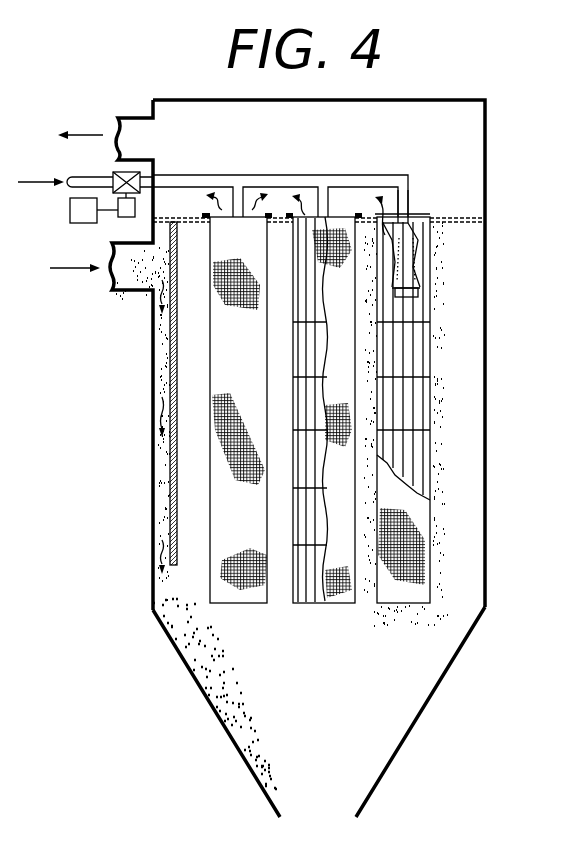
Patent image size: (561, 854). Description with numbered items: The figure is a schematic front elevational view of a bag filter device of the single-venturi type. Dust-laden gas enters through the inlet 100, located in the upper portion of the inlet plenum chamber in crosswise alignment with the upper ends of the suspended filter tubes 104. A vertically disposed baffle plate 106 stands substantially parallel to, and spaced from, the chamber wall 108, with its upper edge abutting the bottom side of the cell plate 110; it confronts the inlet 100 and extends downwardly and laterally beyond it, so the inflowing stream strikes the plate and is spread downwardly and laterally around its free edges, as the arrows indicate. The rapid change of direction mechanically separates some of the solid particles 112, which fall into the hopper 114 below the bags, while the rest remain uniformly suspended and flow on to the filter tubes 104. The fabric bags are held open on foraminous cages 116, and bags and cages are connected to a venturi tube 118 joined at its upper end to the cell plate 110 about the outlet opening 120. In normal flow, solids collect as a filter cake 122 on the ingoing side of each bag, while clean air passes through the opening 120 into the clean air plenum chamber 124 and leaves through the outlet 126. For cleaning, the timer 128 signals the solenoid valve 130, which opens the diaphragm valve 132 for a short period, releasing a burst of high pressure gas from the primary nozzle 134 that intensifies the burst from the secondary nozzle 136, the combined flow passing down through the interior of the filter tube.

The inlet 100 is at (157, 277).
The filter tubes 104 is at (225, 350).
The baffle plate 106 is at (153, 470).
The chamber wall 108 is at (170, 380).
The cell plate 110 is at (462, 216).
The particles 112 is at (120, 277).
The hopper 114 is at (230, 745).
The foraminous cages 116 is at (402, 377).
The venturi tube 118 is at (415, 267).
The outlet opening 120 is at (415, 227).
The filter cake 122 is at (443, 437).
The clean air plenum chamber 124 is at (342, 133).
The outlet 126 is at (150, 137).
The timer 128 is at (70, 212).
The solenoid valve 130 is at (125, 218).
The diaphragm valve 132 is at (113, 175).
The primary nozzle 134 is at (398, 243).
The secondary nozzle 136 is at (407, 293).